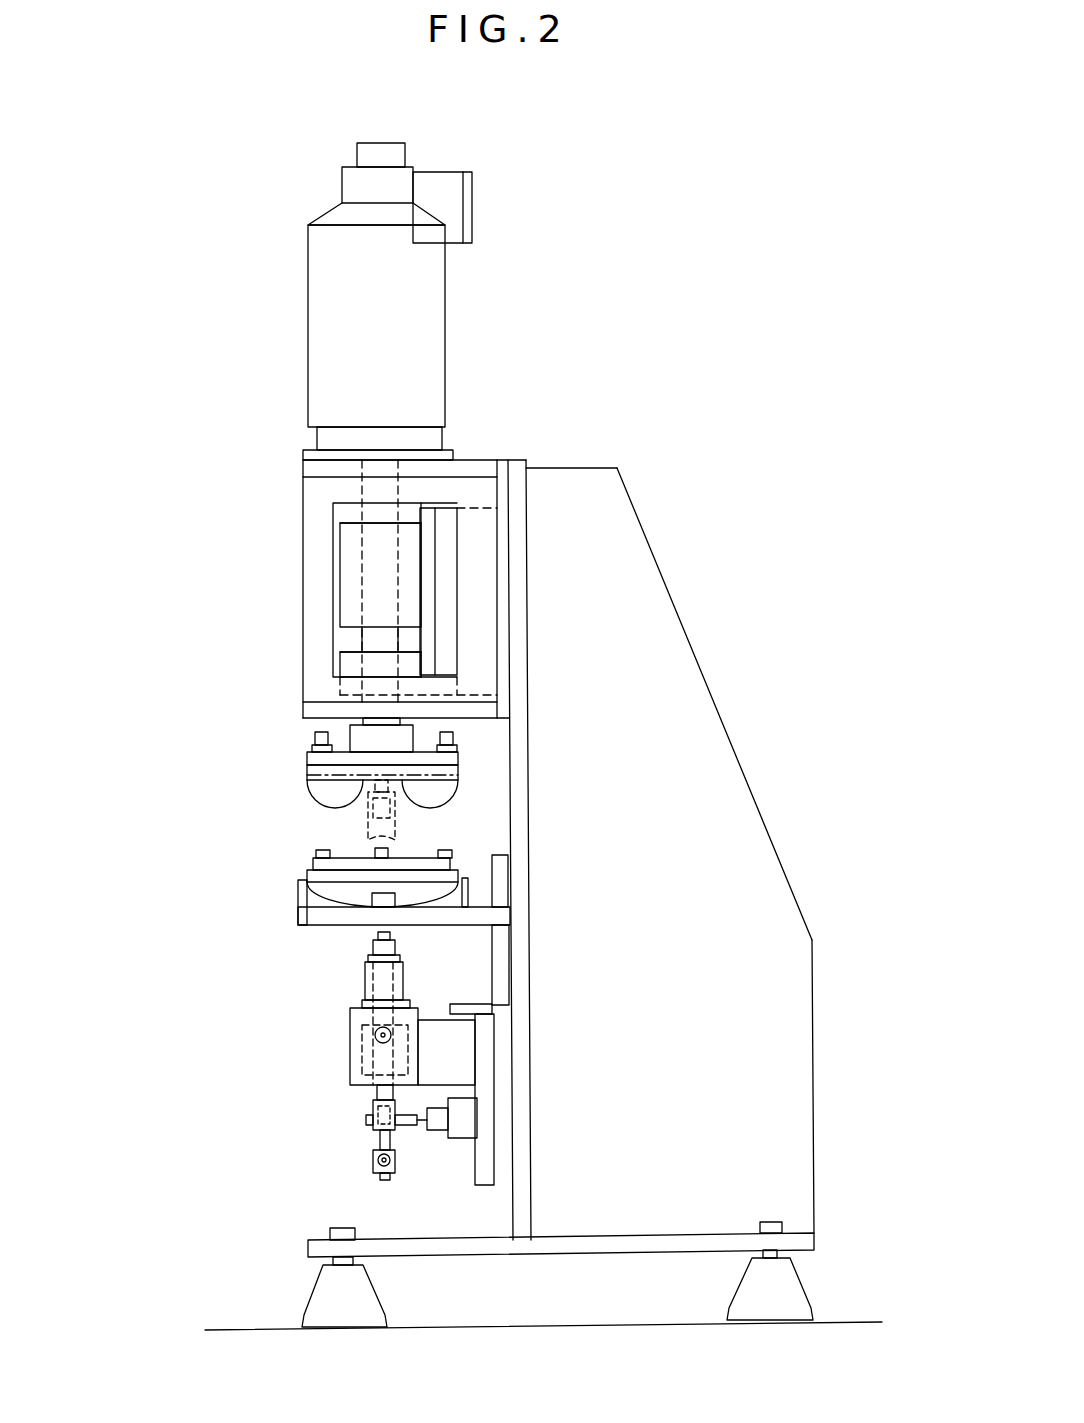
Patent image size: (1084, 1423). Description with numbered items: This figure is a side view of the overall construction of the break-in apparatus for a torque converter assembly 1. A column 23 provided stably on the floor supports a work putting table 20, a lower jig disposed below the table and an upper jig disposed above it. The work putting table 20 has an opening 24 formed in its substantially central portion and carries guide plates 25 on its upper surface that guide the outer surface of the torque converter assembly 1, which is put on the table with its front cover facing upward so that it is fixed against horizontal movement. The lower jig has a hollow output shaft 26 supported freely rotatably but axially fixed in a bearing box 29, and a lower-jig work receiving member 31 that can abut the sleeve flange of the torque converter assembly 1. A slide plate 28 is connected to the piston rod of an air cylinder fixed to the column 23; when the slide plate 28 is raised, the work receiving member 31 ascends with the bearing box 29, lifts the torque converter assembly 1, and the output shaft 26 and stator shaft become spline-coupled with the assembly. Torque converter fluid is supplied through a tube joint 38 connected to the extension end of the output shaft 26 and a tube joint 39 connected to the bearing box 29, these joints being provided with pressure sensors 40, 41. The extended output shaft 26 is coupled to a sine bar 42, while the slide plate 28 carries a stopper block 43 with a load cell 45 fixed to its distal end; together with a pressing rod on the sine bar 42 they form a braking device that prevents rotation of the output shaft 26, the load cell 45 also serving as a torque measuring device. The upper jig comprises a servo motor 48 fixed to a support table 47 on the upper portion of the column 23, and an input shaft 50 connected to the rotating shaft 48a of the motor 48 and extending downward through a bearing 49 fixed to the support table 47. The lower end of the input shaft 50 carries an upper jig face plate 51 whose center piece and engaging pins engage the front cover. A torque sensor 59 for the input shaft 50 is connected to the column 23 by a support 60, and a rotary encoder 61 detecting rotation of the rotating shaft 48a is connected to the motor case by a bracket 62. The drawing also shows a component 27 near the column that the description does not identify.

The torque converter assembly 1 is at (313, 797).
The work putting table 20 is at (473, 915).
The column 23 is at (520, 520).
The opening 24 is at (405, 905).
The guide plates 25 is at (300, 915).
The hollow output shaft 26 is at (373, 1110).
The support plate 27 is at (500, 973).
The slide plate 28 is at (480, 1090).
The bearing box 29 is at (423, 1055).
The lower-jig work receiving member 31 is at (365, 980).
The tube joint 38 is at (385, 1178).
The tube joint 39 is at (350, 1030).
The pressure sensor 40 is at (384, 1160).
The pressure sensor 41 is at (383, 1042).
The sine bar 42 is at (408, 1124).
The stopper block 43 is at (465, 1122).
The load cell 45 is at (437, 1130).
The support table 47 is at (308, 453).
The motor 48 is at (445, 313).
The rotating shaft 48a is at (375, 512).
The bearing 49 is at (340, 668).
The input shaft 50 is at (375, 637).
The upper jig face plate 51 is at (310, 762).
The torque sensor 59 is at (340, 583).
The support 60 is at (455, 528).
The rotary encoder 61 is at (398, 153).
The bracket 62 is at (472, 215).